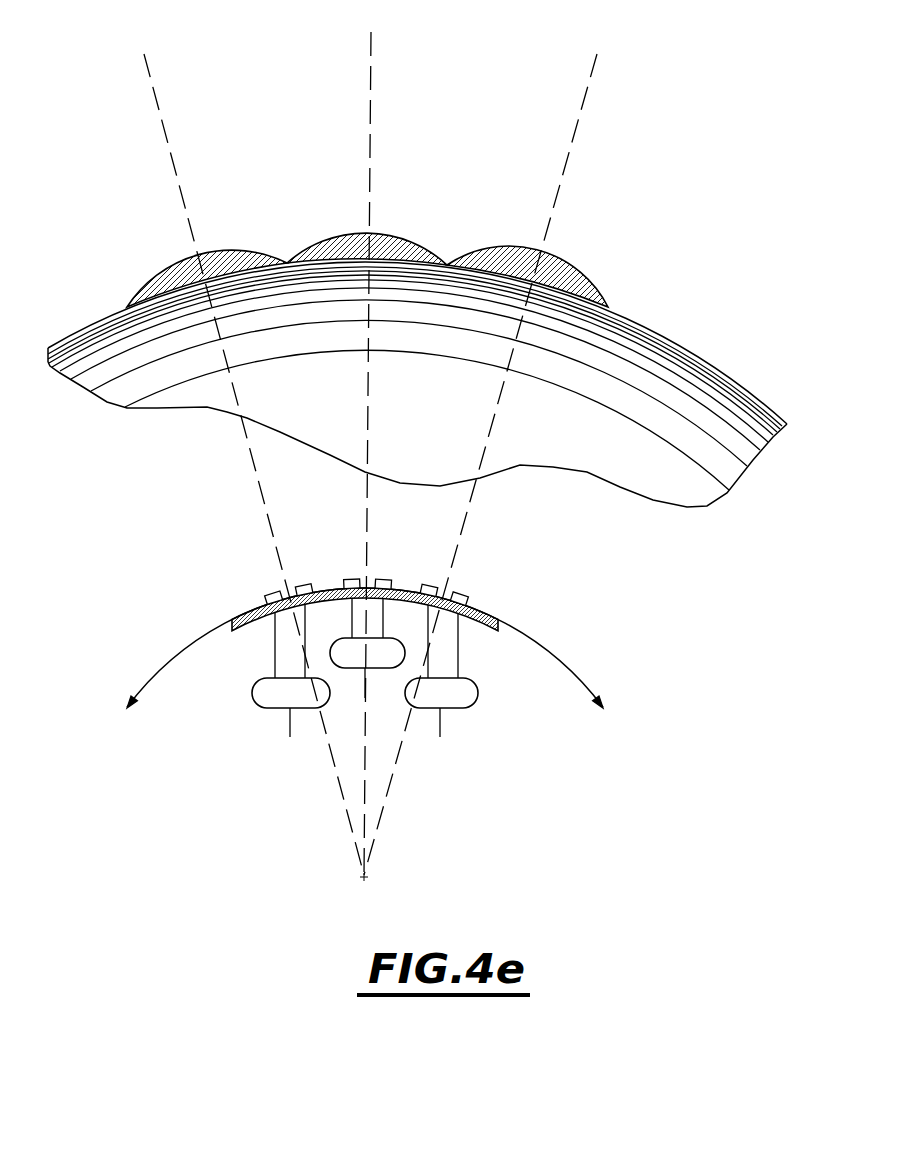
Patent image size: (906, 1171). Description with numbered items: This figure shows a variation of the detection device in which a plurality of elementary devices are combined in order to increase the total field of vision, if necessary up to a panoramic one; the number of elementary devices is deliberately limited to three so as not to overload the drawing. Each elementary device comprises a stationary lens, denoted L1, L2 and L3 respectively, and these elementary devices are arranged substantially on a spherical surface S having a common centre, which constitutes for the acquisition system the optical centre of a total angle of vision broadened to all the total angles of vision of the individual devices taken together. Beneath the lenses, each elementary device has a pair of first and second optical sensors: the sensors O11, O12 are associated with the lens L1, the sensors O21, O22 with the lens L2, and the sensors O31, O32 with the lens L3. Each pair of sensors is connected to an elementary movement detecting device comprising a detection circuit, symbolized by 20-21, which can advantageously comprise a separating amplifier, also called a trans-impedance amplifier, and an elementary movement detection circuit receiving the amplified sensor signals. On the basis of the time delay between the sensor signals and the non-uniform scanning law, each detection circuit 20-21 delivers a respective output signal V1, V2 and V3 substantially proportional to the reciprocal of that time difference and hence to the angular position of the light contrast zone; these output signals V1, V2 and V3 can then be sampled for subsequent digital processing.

The stationary lens L1 is at (231, 252).
The stationary lens L2 is at (392, 242).
The stationary lens L3 is at (570, 266).
The first sensor O11 is at (267, 591).
The second sensor O12 is at (307, 586).
The first sensor O21 is at (350, 578).
The second sensor O22 is at (383, 580).
The first sensor O31 is at (427, 585).
The second sensor O32 is at (464, 593).
The sensor surface S is at (169, 658).
The detection circuit 20-21 is at (365, 673).
The output signal V1 is at (288, 725).
The output signal V2 is at (367, 682).
The output signal V3 is at (440, 723).